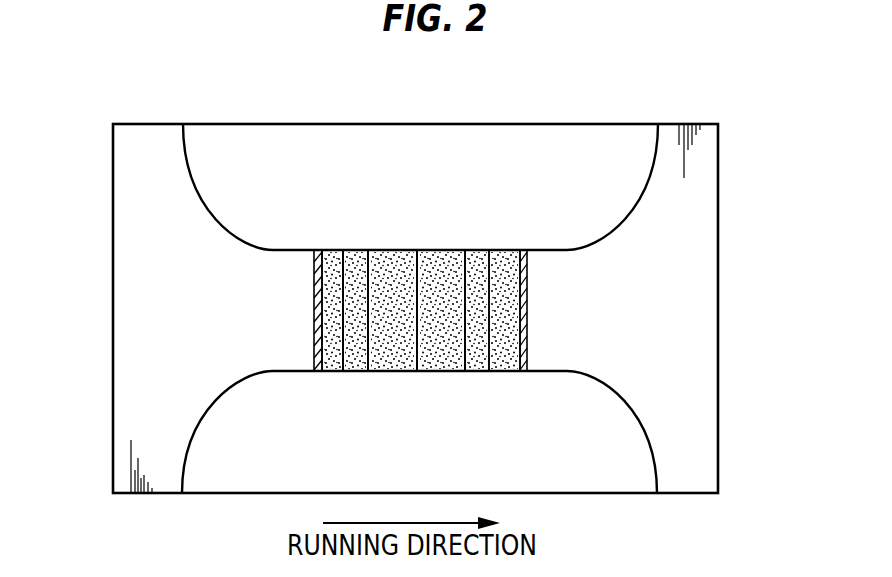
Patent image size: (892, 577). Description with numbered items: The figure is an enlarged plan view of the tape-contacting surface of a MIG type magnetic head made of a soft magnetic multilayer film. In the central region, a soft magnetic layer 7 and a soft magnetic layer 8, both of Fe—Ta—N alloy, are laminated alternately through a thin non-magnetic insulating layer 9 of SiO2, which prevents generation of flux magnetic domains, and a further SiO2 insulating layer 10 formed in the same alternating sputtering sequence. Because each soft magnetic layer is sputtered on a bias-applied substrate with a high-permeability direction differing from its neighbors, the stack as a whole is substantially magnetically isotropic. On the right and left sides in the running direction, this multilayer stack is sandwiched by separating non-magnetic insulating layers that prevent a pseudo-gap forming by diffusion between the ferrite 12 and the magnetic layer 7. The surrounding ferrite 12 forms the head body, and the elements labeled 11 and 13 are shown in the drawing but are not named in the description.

The soft magnetic layer 7 is at (354, 372).
The soft magnetic layer 8 is at (403, 372).
The non-magnetic insulating layer 9 is at (343, 250).
The insulating layer 10 is at (316, 250).
The non-magnetic substrate 11 is at (345, 148).
The ferrite 12 is at (128, 313).
The magnetic thin film 13 is at (425, 262).